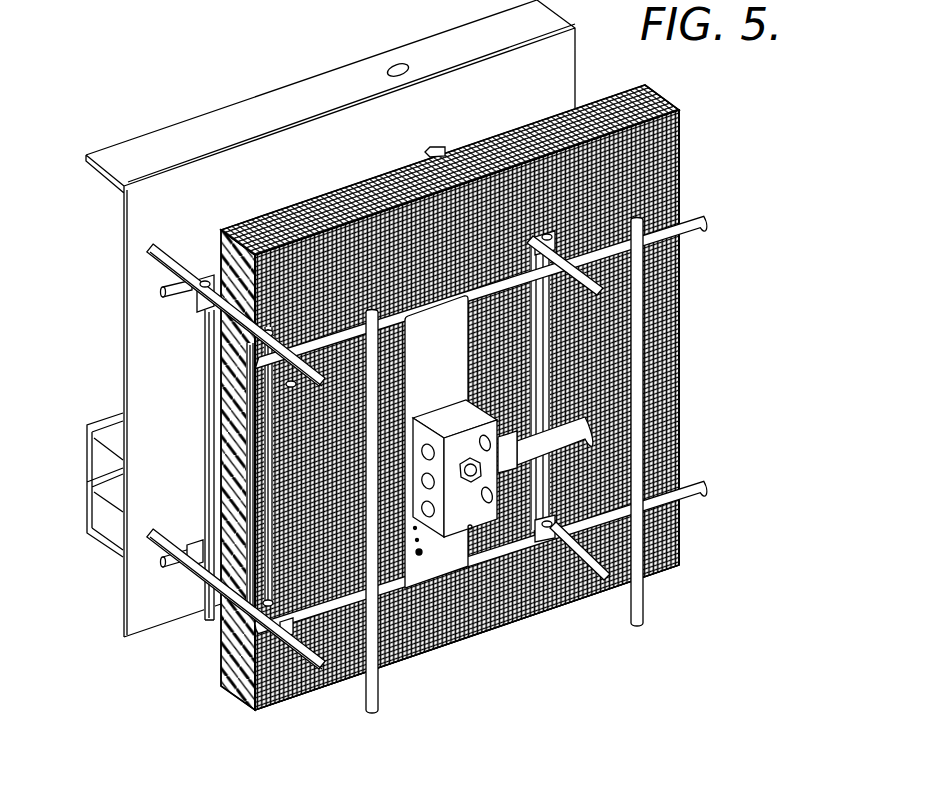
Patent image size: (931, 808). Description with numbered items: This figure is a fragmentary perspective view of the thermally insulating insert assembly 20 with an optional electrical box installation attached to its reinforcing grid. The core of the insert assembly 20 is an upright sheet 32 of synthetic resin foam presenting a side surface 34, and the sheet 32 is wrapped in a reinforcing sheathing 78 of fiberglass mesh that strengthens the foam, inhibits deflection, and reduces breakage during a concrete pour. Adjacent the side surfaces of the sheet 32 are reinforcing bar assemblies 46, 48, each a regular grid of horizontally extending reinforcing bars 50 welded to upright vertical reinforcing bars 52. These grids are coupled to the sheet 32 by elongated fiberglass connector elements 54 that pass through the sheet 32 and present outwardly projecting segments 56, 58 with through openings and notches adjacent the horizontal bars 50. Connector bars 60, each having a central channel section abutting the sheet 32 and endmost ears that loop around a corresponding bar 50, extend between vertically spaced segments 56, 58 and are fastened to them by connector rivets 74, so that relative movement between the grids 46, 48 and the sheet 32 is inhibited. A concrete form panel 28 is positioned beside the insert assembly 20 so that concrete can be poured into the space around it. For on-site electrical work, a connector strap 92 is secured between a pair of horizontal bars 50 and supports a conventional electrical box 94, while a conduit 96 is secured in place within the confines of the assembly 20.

The insert assembly 20 is at (712, 78).
The concrete form panel 28 is at (170, 147).
The sheet 32 is at (690, 351).
The side surface 34 is at (676, 400).
The reinforcing bar assembly 46 is at (708, 479).
The reinforcing bar assembly 48 is at (193, 603).
The horizontally extending reinforcing bar 50 is at (697, 217).
The vertical reinforcing bar 52 is at (379, 690).
The connector element 54 is at (345, 436).
The outwardly projecting segment 56 is at (293, 388).
The outwardly extending segment 58 is at (180, 256).
The connector bar 60 is at (203, 418).
The connector rivet 74 is at (205, 280).
The reinforcing sheathing 78 is at (672, 150).
The connector strap 92 is at (437, 315).
The electrical box 94 is at (458, 416).
The conduit 96 is at (565, 422).